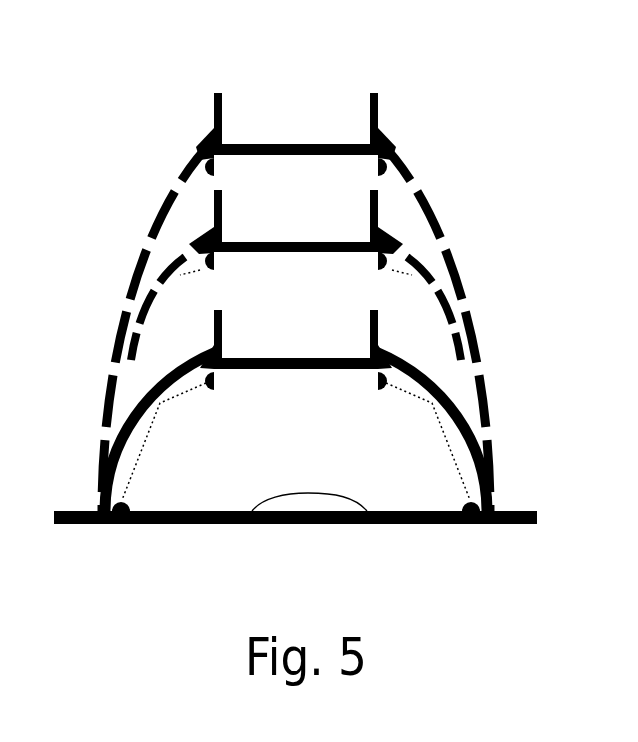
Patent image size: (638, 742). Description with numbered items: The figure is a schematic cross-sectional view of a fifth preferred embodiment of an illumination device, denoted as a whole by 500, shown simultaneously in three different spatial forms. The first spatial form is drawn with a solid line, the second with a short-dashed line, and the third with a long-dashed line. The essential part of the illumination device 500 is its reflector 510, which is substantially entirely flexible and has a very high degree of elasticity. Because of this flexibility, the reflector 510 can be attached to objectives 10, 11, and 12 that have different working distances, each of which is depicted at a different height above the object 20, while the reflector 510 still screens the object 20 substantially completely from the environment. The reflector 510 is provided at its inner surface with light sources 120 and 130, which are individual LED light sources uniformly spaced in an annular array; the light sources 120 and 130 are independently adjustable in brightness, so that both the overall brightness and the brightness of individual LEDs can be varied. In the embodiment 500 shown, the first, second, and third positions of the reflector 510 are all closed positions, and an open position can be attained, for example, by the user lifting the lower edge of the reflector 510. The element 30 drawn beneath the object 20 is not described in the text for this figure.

The illumination device 500 is at (131, 67).
The objective 10 is at (254, 358).
The objective 11 is at (273, 243).
The objective 12 is at (270, 144).
The object 20 is at (300, 498).
The base 30 is at (402, 525).
The light source 120 is at (127, 503).
The light source 130 is at (207, 391).
The reflector 510 is at (492, 452).